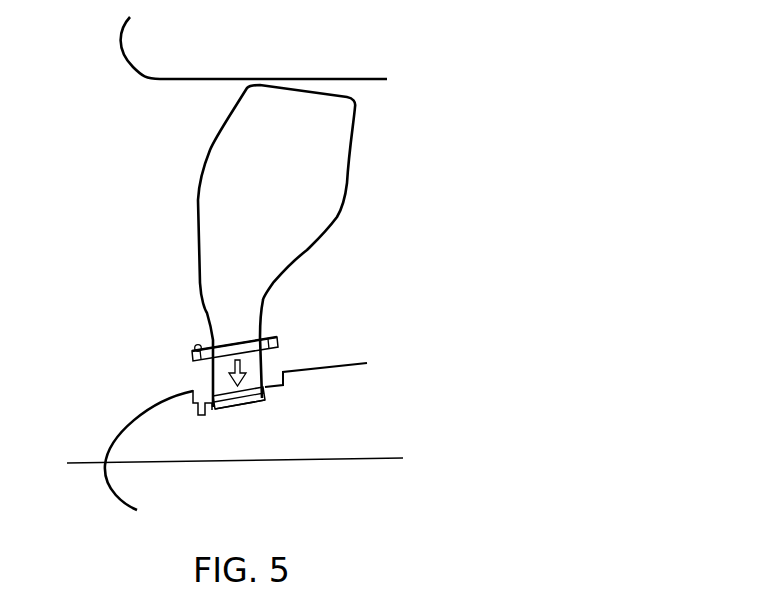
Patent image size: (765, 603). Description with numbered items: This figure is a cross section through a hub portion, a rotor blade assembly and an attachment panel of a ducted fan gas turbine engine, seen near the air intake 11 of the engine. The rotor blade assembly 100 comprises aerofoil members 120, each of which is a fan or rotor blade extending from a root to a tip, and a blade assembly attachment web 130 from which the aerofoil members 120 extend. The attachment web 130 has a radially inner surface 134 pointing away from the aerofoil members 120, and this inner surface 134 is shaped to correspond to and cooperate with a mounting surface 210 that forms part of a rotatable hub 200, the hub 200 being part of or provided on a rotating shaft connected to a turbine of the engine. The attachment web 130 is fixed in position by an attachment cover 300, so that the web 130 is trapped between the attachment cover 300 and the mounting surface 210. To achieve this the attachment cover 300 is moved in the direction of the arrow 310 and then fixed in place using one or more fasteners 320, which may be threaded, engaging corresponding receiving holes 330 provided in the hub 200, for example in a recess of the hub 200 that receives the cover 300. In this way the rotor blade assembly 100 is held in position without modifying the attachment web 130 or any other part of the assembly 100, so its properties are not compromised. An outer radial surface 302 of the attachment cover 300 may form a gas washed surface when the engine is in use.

The air intake 11 is at (150, 57).
The fan blade assembly 100 is at (254, 294).
The aerofoil member 120 is at (317, 187).
The blade assembly attachment web 130 is at (201, 430).
The radially inner surface 134 is at (230, 408).
The rotatable hub 200 is at (235, 436).
The mounting surface 210 is at (263, 401).
The attachment cover 300 is at (245, 304).
The outer radial surface 302 is at (233, 338).
The arrow 310 is at (250, 364).
The fastener 320 is at (190, 356).
The receiving hole 330 is at (197, 413).